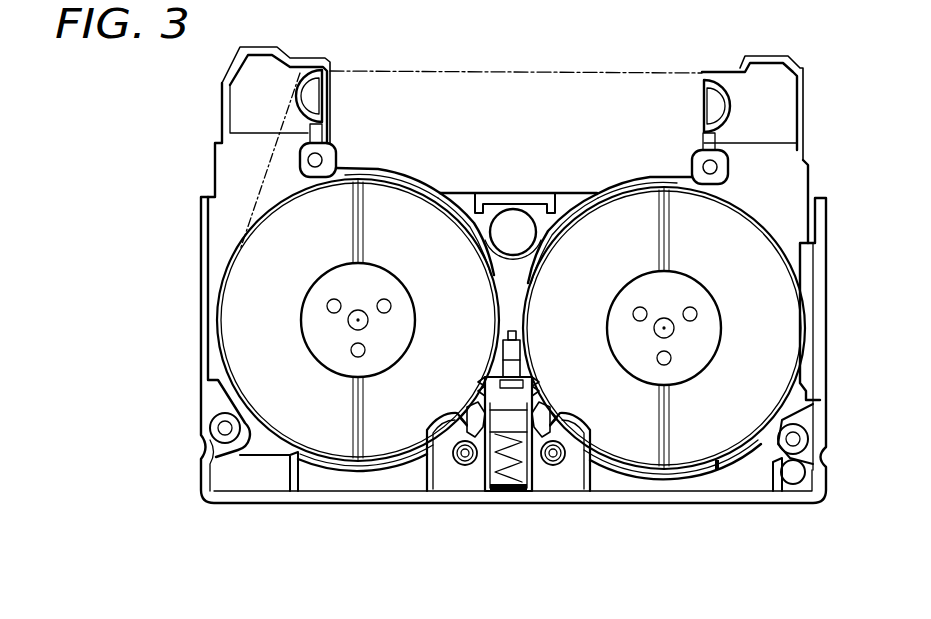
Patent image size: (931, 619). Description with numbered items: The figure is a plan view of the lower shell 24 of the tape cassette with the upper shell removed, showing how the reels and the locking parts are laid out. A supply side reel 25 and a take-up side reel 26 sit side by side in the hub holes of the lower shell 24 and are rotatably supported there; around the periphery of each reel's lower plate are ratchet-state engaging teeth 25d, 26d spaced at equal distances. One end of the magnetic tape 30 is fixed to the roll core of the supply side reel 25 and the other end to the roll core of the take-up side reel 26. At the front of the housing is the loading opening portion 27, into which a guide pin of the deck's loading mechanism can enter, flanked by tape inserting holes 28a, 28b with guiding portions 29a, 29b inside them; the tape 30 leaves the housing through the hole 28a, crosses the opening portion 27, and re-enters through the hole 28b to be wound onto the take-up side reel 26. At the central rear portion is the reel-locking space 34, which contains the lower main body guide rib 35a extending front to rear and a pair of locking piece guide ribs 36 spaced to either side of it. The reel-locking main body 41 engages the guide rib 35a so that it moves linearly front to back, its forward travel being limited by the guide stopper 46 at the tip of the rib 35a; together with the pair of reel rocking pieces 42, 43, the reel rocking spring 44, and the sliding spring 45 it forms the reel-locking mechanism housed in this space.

The lower shell 24 is at (240, 506).
The supply side reel 25 is at (328, 462).
The take-up side reel 26 is at (717, 470).
The loading opening portion 27 is at (527, 130).
The tape inserting hole 28a is at (255, 107).
The tape inserting hole 28b is at (766, 90).
The guiding portion 29a is at (302, 76).
The guiding portion 29b is at (719, 315).
The magnetic tape 30 is at (450, 72).
The reel-locking space 34 is at (478, 468).
The lower main body guide rib 35a is at (522, 362).
The locking piece guide rib 36 is at (462, 476).
The reel-locking main body 41 is at (510, 402).
The reel rocking piece 42 is at (466, 414).
The reel rocking piece 43 is at (556, 420).
The reel rocking spring 44 is at (517, 405).
The sliding spring 45 is at (505, 477).
The guide stopper 46 is at (510, 331).
The engaging teeth 25d is at (482, 380).
The engaging teeth 26d is at (543, 380).